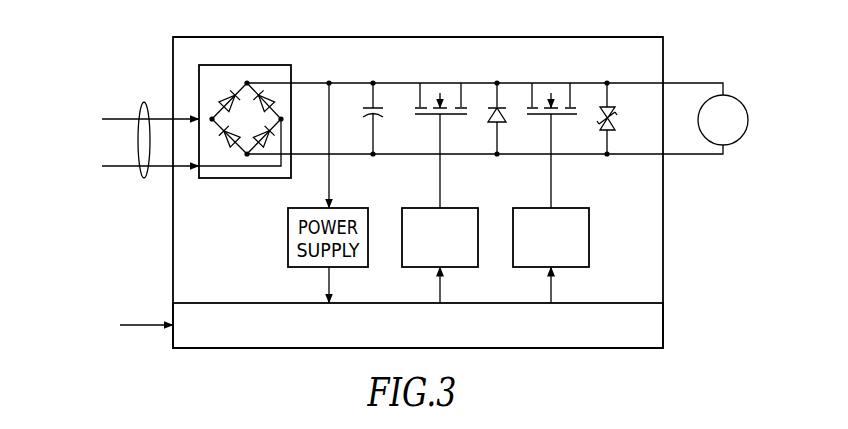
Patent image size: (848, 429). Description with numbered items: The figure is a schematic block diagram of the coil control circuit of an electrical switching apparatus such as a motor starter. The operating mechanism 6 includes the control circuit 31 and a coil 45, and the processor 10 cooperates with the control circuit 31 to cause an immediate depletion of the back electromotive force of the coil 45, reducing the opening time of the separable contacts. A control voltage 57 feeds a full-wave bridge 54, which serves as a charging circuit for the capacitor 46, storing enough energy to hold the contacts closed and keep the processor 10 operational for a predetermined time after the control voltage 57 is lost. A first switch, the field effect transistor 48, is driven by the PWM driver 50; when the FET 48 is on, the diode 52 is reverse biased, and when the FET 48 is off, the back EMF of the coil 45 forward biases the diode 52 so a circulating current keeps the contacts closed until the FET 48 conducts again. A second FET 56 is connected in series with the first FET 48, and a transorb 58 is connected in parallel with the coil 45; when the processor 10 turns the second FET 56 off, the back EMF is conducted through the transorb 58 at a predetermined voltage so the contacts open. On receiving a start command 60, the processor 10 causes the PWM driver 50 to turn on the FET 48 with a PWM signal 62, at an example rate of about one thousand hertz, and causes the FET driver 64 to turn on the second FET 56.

The operating mechanism 6 is at (698, 201).
The processor 10 is at (663, 326).
The control circuit 31 is at (663, 268).
The coil 45 is at (733, 97).
The capacitor 46 is at (368, 115).
The field effect transistor 48 is at (452, 115).
The pulse width modulated driver 50 is at (458, 207).
The diode 52 is at (505, 116).
The full-wave bridge 54 is at (235, 179).
The second FET 56 is at (562, 115).
The control voltage 57 is at (144, 103).
The transorb 58 is at (617, 118).
The start command 60 is at (137, 327).
The PWM signal 62 is at (438, 135).
The FET driver 64 is at (572, 207).